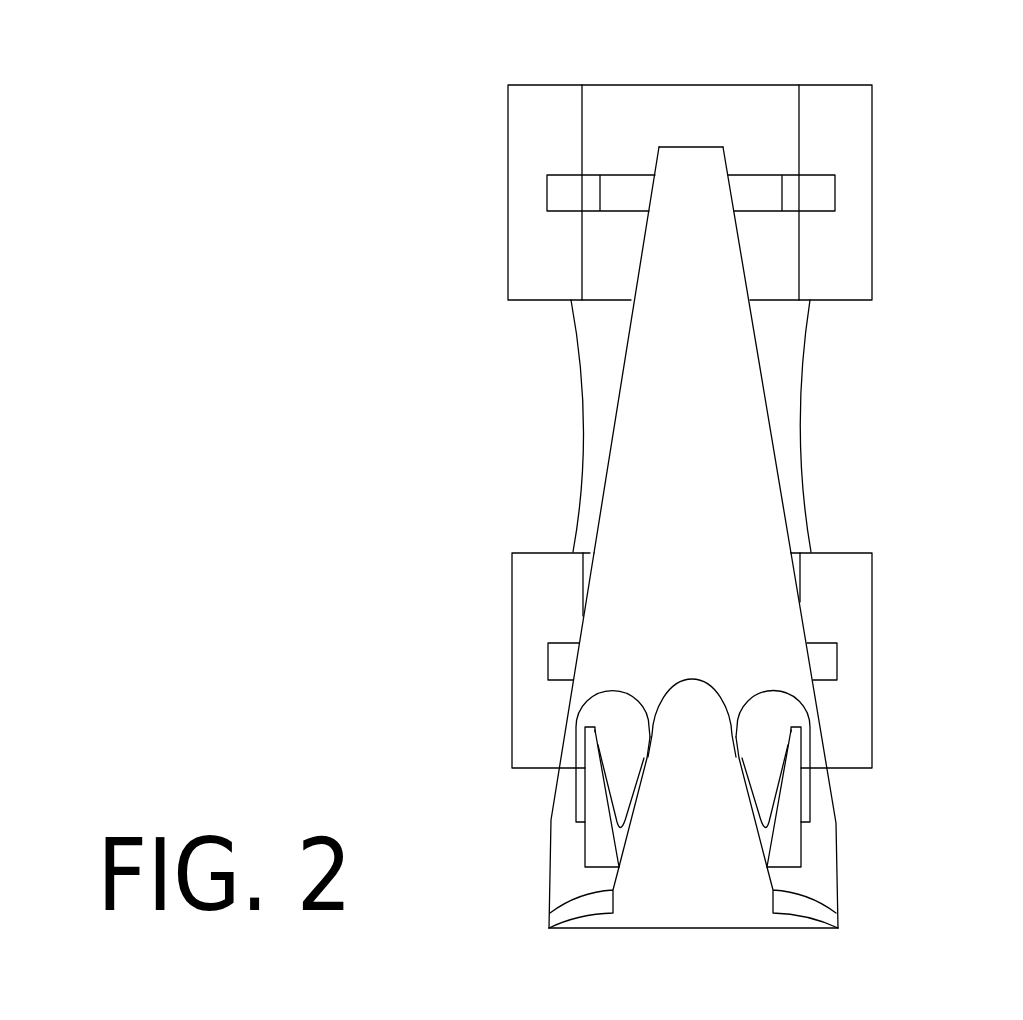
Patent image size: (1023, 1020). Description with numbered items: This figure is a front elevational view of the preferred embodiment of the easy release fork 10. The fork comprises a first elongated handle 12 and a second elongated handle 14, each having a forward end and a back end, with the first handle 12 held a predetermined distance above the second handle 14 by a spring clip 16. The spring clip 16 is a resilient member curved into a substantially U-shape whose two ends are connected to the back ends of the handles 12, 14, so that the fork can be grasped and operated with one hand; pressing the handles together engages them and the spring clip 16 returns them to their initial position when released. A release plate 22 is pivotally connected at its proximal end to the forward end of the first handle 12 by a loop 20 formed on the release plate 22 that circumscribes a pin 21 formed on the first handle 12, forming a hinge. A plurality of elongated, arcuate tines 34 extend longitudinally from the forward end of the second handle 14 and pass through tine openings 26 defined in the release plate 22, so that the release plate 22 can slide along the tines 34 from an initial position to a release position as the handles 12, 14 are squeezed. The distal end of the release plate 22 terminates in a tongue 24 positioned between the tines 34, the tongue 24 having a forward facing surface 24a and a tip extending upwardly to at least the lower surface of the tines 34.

The easy release fork 10 is at (337, 247).
The first elongated handle 12 is at (838, 148).
The second elongated handle 14 is at (848, 630).
The spring clip 16 is at (785, 430).
The loop 20 is at (683, 177).
The pin 21 is at (623, 193).
The release plate 22 is at (662, 512).
The tongue 24 is at (612, 648).
The forward facing surface 24a is at (667, 843).
The tine openings 26 is at (587, 718).
The tines 34 is at (598, 852).